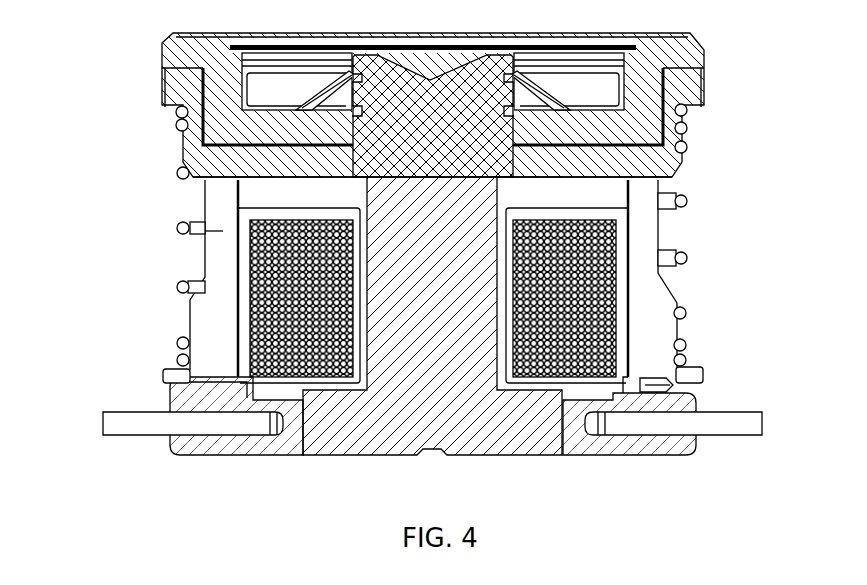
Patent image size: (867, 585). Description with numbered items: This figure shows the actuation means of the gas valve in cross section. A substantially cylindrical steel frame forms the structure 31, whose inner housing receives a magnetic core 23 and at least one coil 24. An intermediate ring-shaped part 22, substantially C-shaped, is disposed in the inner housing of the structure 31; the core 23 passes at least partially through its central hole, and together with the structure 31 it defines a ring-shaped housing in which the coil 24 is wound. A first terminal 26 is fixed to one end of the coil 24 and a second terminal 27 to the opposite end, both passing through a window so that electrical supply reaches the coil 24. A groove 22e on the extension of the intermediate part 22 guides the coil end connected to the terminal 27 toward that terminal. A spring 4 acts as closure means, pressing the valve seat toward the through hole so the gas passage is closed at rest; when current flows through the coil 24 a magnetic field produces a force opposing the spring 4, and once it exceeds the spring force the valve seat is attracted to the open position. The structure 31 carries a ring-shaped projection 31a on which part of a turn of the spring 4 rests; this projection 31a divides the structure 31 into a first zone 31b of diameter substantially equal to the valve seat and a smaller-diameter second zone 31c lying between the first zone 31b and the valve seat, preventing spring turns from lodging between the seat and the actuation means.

The spring 4 is at (178, 170).
The intermediate ring-shaped part 22 is at (238, 210).
The groove 22e is at (688, 380).
The magnetic core 23 is at (460, 448).
The coil 24 is at (262, 270).
The first terminal 26 is at (640, 415).
The second terminal 27 is at (147, 423).
The structure 31 is at (210, 318).
The ring-shaped projection 31a is at (675, 282).
The first zone 31b is at (652, 342).
The second zone 31c is at (177, 228).